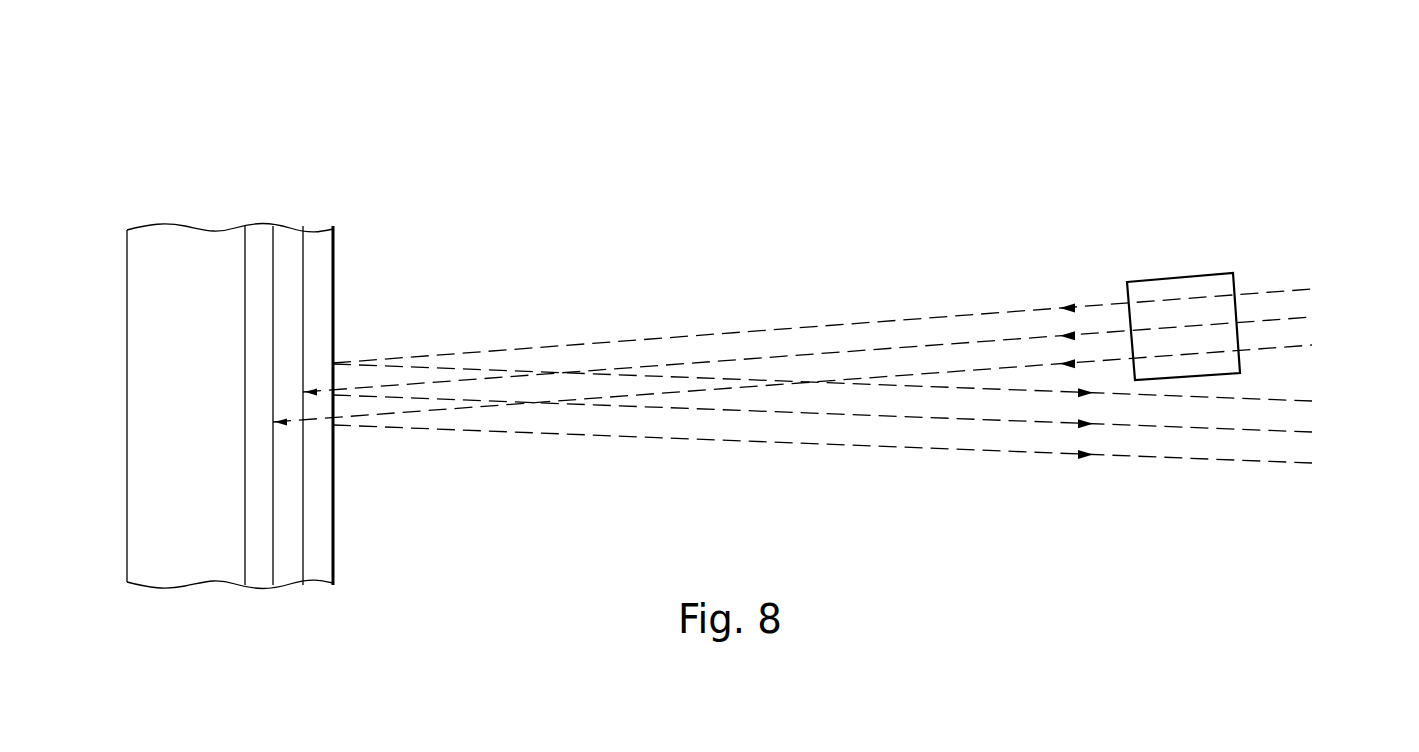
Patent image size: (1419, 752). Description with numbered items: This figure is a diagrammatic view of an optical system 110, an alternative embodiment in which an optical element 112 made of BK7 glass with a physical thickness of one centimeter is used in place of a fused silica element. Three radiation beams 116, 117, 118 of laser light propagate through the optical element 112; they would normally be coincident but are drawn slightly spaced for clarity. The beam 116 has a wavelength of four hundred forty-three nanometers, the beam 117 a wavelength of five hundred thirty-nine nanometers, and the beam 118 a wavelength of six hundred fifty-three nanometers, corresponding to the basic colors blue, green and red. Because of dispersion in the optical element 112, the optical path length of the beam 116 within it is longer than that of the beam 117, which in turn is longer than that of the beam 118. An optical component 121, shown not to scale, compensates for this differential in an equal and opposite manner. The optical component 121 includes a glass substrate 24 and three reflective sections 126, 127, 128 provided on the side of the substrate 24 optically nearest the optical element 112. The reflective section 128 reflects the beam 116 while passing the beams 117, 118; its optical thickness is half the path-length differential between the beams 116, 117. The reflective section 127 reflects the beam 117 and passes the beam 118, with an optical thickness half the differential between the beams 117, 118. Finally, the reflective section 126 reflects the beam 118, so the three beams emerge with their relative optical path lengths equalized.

The optical system 110 is at (1018, 88).
The optical element 112 is at (1180, 277).
The radiation beam 116 is at (1268, 290).
The radiation beam 117 is at (1300, 317).
The radiation beam 118 is at (1300, 347).
The optical component 121 is at (182, 124).
The substrate 24 is at (201, 419).
The reflective section 126 is at (259, 238).
The reflective section 127 is at (288, 572).
The reflective section 128 is at (321, 238).